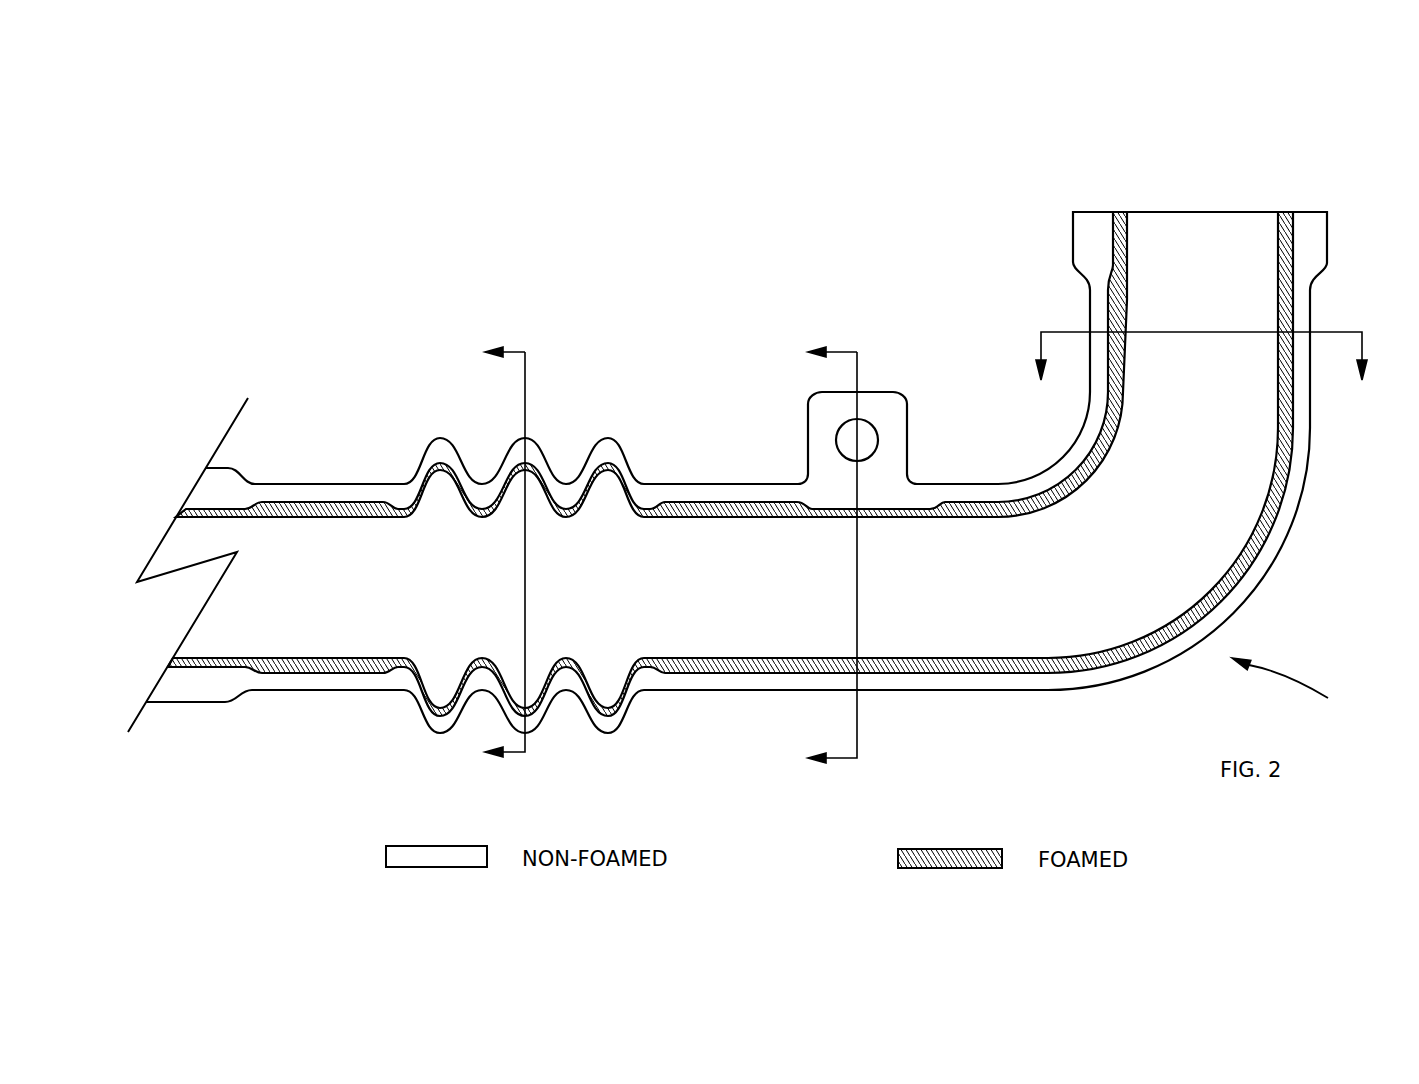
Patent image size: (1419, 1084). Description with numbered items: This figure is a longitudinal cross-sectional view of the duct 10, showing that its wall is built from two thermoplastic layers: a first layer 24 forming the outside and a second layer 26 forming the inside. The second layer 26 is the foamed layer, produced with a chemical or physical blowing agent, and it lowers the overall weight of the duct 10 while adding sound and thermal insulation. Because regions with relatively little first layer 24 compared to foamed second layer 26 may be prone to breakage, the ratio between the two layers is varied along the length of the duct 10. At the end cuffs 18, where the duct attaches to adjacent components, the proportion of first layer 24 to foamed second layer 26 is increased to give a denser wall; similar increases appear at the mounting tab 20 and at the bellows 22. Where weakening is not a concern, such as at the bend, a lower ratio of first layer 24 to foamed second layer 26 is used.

The duct 10 is at (908, 167).
The end cuffs 18 is at (227, 468).
The mounting tab 20 is at (882, 405).
The bellows 22 is at (612, 457).
The first layer 24 is at (1300, 437).
The second layer 26 is at (1282, 478).